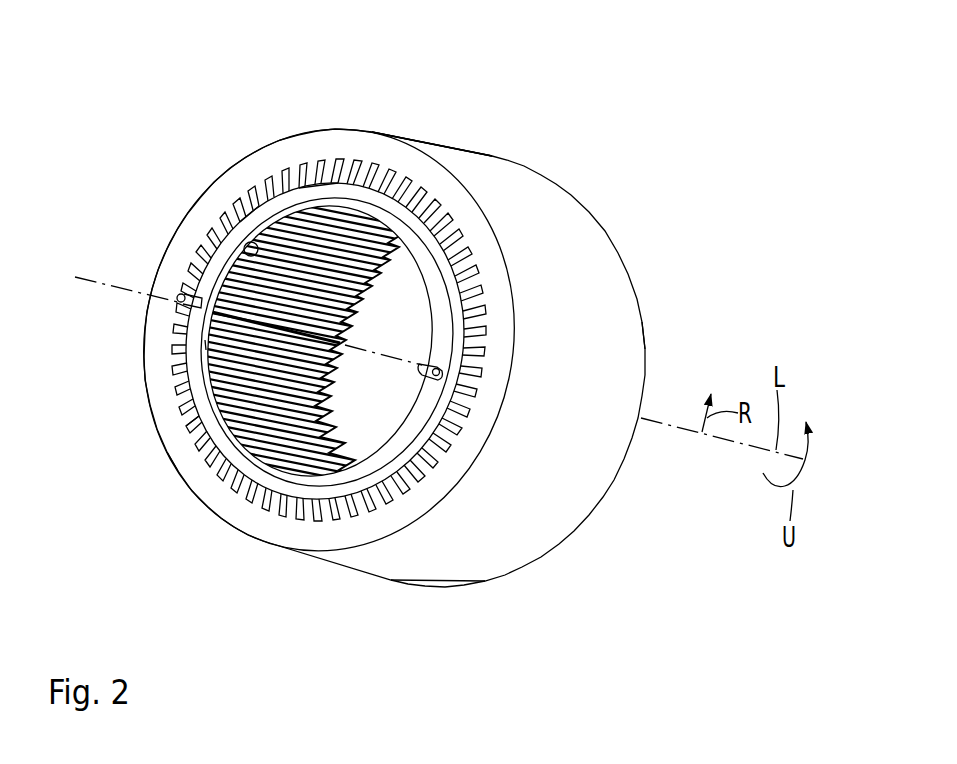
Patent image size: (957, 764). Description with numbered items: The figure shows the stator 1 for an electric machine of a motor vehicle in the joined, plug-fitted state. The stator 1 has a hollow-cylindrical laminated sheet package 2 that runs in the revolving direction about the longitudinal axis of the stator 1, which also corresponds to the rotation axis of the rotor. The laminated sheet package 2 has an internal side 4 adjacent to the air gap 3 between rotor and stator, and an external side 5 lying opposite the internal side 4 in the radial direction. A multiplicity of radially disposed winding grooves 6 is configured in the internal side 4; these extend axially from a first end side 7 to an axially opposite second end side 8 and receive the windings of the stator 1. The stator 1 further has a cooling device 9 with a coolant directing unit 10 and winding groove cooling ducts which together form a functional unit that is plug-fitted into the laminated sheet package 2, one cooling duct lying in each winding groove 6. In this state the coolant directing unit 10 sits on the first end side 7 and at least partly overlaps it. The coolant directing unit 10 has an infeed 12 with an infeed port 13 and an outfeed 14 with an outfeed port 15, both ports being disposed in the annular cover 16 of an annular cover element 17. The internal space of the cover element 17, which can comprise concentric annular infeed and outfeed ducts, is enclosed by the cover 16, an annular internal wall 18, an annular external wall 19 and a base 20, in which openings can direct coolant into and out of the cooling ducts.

The stator 1 is at (411, 87).
The laminated sheet package 2 is at (599, 249).
The air gap 3 is at (315, 376).
The internal side 4 is at (320, 378).
The external side 5 is at (513, 537).
The winding grooves 6 is at (185, 442).
The first end side 7 is at (231, 508).
The second end side 8 is at (645, 282).
The cooling device 9 is at (300, 163).
The coolant directing unit 10 is at (424, 292).
The infeed 12 is at (175, 275).
The infeed port 13 is at (177, 296).
The outfeed 14 is at (435, 341).
The outfeed port 15 is at (442, 379).
The annular cover 16 is at (263, 197).
The cover element 17 is at (341, 188).
The internal wall 18 is at (205, 345).
The external wall 19 is at (430, 420).
The base 20 is at (241, 255).